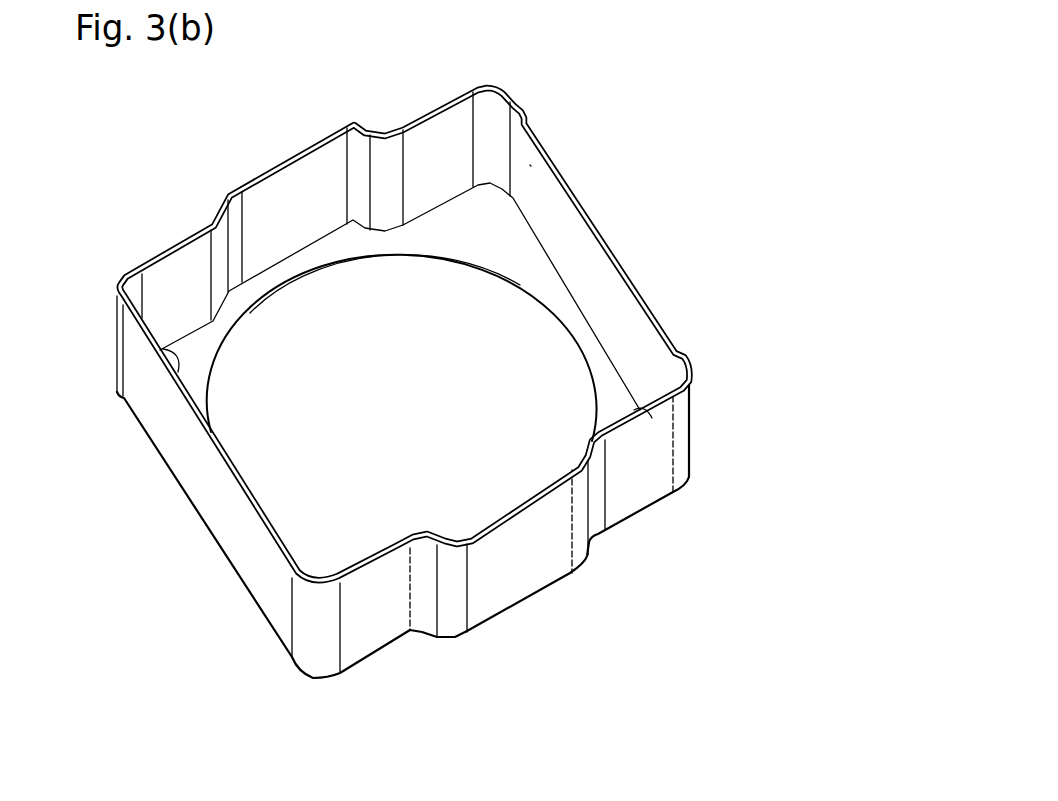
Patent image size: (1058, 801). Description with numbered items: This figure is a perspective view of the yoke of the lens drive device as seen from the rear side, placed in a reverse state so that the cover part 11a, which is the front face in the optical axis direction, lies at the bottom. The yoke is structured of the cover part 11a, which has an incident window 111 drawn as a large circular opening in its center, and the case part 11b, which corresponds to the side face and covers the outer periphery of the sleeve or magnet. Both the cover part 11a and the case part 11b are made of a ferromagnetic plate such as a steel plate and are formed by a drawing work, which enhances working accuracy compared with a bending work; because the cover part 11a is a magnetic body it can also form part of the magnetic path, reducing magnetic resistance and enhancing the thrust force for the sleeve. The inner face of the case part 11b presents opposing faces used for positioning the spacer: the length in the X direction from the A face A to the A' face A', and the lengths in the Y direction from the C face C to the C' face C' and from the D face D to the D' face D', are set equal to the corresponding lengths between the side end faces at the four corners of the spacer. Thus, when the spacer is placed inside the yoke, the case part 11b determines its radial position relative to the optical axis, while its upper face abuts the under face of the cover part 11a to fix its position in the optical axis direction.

The incident window 111 is at (373, 350).
The cover part 11a is at (493, 228).
The case part 11b is at (615, 252).
The A face A is at (563, 137).
The A' face A' is at (127, 352).
The C face C is at (472, 125).
The C' face C' is at (694, 438).
The D face D is at (170, 248).
The D' face D' is at (418, 564).